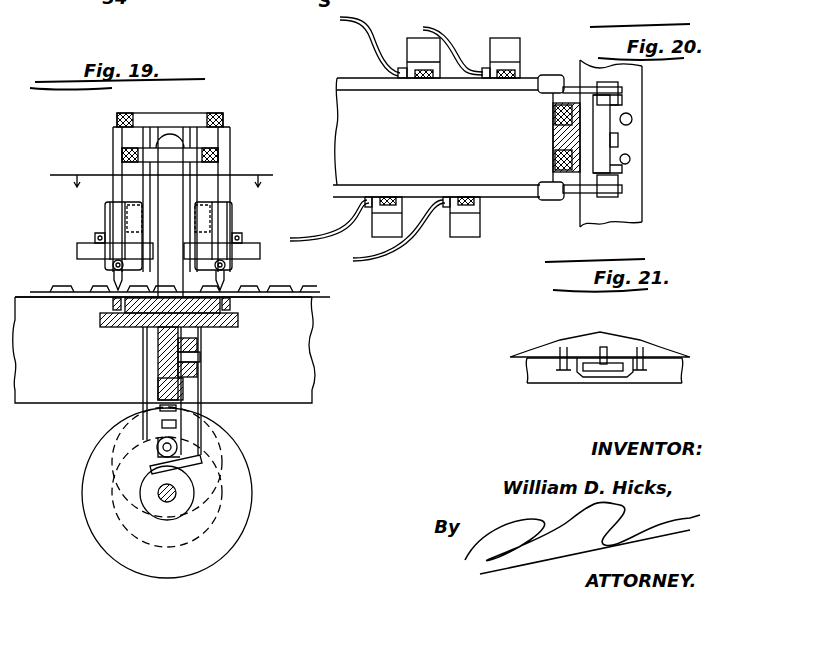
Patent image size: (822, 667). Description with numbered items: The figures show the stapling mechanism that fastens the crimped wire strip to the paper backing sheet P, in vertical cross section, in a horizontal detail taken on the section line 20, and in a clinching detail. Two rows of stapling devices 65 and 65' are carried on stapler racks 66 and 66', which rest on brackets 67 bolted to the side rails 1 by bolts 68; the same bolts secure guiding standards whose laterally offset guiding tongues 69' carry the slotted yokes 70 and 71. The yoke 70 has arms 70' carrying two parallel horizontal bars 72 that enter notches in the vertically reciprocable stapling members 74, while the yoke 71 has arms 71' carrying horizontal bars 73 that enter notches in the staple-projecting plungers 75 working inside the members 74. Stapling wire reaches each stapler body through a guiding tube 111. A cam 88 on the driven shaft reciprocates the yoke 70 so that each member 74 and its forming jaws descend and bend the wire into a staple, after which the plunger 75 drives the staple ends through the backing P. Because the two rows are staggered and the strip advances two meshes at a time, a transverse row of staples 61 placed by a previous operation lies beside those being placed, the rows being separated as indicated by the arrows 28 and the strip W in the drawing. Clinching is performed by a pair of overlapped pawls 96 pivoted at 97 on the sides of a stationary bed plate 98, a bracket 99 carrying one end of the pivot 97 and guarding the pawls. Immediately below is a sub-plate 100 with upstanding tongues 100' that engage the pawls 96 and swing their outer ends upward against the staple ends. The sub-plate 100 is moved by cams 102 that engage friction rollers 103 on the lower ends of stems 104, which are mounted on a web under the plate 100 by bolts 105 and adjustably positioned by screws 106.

In FIG. 19, the side rails 1 is at (318, 351).
In FIG. 20, the side rails 1 is at (644, 106).
In FIG. 19, the section line 20— 20 is at (159, 170).
In FIG. 19, the direction arrow / movement 28 is at (228, 286).
In FIG. 19, the transverse row of staples 61 is at (153, 282).
In FIG. 19, the stapling device 65 is at (226, 245).
In FIG. 20, the stapling device 65 is at (407, 230).
In FIG. 19, the stapling device 65' is at (105, 245).
In FIG. 20, the stapling device 65' is at (455, 42).
In FIG. 20, the stapler rack 66 is at (436, 176).
In FIG. 20, the stapler rack 66' is at (444, 131).
In FIG. 20, the bracket 67 is at (618, 147).
In FIG. 20, the bolt 68 is at (631, 159).
In FIG. 20, the guiding tongue 69' is at (542, 137).
In FIG. 19, the yoke 70 is at (146, 180).
In FIG. 20, the yoke 70 is at (538, 112).
In FIG. 19, the arm of yoke 70' is at (196, 180).
In FIG. 19, the yoke 71 is at (171, 188).
In FIG. 20, the yoke 71 is at (577, 119).
In FIG. 19, the arm of yoke 71' is at (220, 106).
In FIG. 19, the horizontal bar 72 is at (124, 154).
In FIG. 19, the horizontal bar 73 is at (117, 121).
In FIG. 19, the stapling member 74 is at (113, 191).
In FIG. 19, the staple-projecting plunger 75 is at (113, 131).
In FIG. 19, the cam 88 is at (92, 474).
In FIG. 21, the pawl 96 is at (596, 362).
In FIG. 21, the pivot 97 is at (608, 356).
In FIG. 19, the bed plate 98 is at (128, 305).
In FIG. 21, the bed plate 98 is at (547, 349).
In FIG. 19, the bracket 99 is at (113, 303).
In FIG. 21, the bracket 99 is at (596, 380).
In FIG. 19, the sub-plate 100 is at (165, 356).
In FIG. 21, the sub-plate 100 is at (581, 370).
In FIG. 19, the upstanding tongue 100' is at (257, 323).
In FIG. 19, the cam 102 is at (182, 468).
In FIG. 19, the friction roller 103 is at (157, 447).
In FIG. 19, the stem 104 is at (190, 433).
In FIG. 19, the bolt 105 is at (202, 360).
In FIG. 19, the screw 106 is at (160, 432).
In FIG. 20, the guiding tube 111 is at (368, 42).
In FIG. 19, the work strip W is at (300, 290).
In FIG. 19, the backing sheet P is at (182, 296).